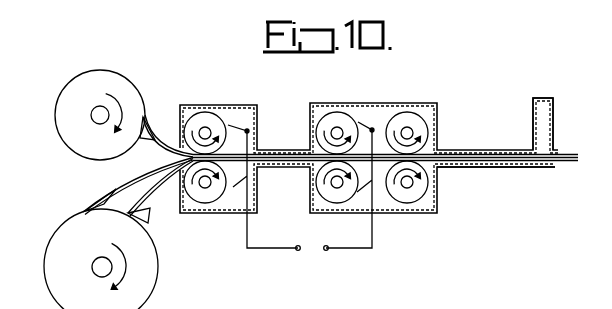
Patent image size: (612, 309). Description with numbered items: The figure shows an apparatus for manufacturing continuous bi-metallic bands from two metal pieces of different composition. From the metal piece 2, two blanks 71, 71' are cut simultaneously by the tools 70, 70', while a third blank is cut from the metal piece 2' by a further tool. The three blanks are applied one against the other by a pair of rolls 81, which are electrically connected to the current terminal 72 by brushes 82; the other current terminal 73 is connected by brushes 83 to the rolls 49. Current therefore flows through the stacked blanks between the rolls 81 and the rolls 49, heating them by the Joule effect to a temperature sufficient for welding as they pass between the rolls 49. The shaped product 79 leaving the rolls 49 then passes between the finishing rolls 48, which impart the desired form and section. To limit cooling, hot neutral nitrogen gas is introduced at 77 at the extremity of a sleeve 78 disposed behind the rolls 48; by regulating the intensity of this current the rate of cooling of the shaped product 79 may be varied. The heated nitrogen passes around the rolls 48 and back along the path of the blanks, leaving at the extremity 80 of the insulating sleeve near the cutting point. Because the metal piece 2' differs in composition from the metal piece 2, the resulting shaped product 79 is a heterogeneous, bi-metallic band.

The metal piece 2' is at (100, 97).
The metal piece 2 is at (101, 247).
The tool 70 is at (160, 204).
The tool 70' is at (138, 186).
The blank 71 is at (152, 204).
The blank 71' is at (99, 189).
The extremity of the sleeve 80 is at (173, 180).
The pair of rolls 81 is at (199, 122).
The brushes 82 is at (228, 125).
The current terminal 72 is at (297, 251).
The current terminal 73 is at (327, 251).
The rolls 49 is at (325, 121).
The brushes 83 is at (358, 122).
The shaped product 79 is at (378, 150).
The finishing rolls 48 is at (413, 122).
The nitrogen inlet 77 is at (542, 98).
The sleeve 78 is at (478, 168).